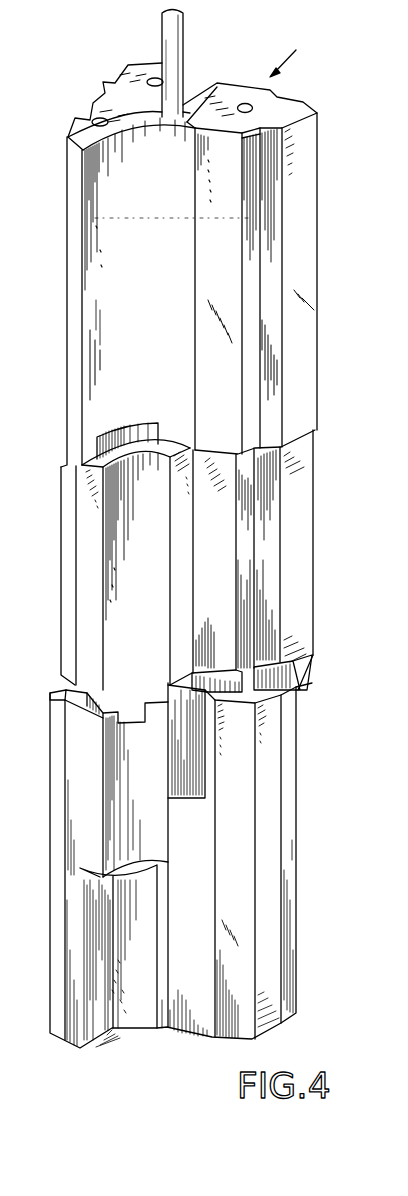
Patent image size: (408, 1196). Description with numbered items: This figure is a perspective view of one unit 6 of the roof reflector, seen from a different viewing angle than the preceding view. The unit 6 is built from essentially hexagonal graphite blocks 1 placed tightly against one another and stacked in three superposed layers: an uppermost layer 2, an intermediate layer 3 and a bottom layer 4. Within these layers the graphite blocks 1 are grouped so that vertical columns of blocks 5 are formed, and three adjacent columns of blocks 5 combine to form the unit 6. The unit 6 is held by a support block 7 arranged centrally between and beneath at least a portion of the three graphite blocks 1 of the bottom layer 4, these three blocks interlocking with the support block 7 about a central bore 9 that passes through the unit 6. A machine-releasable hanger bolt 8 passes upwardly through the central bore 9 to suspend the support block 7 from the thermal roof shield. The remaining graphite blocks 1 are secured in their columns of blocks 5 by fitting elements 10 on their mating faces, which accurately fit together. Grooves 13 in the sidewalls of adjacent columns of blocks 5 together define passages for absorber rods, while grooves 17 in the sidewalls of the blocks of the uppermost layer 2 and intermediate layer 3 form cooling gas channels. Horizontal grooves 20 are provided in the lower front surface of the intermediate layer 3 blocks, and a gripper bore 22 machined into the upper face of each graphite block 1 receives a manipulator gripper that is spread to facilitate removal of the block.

The graphite block 1 is at (72, 214).
The uppermost layer 2 is at (300, 250).
The intermediate layer 3 is at (298, 578).
The bottom layer 4 is at (268, 845).
The column of blocks 5 is at (187, 75).
The unit 6 is at (290, 54).
The support block 7 is at (167, 990).
The hanger bolt 8 is at (167, 40).
The central bore 9 is at (207, 84).
The fitting element 10 is at (148, 423).
The groove 13 is at (95, 347).
The groove 17 is at (268, 358).
The horizontal groove 20 is at (295, 668).
The gripper bore 22 is at (258, 107).